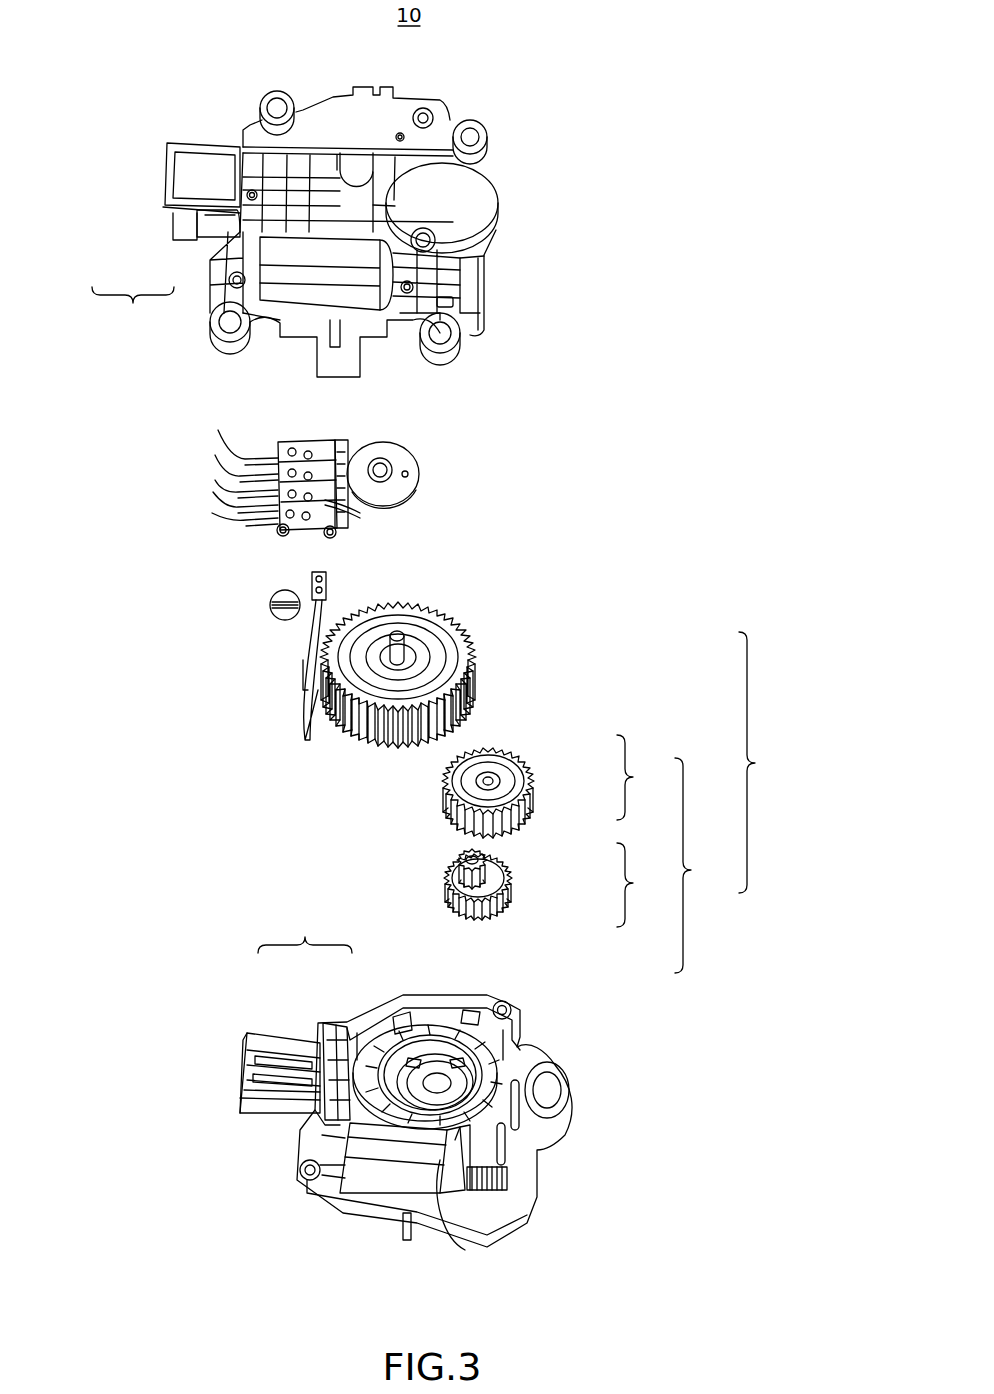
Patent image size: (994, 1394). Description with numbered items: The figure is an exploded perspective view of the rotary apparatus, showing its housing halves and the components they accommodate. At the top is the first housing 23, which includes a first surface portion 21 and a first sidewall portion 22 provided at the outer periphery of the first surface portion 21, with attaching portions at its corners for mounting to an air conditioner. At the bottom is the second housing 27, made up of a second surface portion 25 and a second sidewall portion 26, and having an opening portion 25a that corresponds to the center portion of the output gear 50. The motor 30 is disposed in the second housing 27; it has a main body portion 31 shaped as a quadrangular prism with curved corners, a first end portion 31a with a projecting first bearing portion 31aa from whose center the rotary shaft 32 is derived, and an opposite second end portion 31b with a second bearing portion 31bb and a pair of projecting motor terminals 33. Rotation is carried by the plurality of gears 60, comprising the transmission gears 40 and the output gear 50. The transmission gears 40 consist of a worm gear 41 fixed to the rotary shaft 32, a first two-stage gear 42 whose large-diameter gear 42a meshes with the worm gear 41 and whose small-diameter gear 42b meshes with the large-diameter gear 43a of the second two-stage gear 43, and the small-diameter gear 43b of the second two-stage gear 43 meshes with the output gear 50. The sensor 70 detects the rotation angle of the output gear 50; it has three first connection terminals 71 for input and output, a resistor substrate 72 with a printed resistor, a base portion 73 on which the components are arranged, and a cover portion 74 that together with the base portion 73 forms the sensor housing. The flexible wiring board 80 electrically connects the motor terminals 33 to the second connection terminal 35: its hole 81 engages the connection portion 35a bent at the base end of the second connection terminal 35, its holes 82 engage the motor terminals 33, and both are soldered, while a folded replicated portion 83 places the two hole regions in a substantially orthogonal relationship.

The first surface portion 21 is at (186, 178).
The first sidewall portion 22 is at (212, 222).
The first housing 23 is at (133, 310).
The second surface portion 25 is at (337, 1025).
The opening portion 25a is at (430, 1060).
The second sidewall portion 26 is at (268, 1033).
The second housing 27 is at (296, 1015).
The motor 30 is at (358, 1200).
The main body portion 31 is at (393, 1177).
The first end portion 31a is at (452, 1140).
The first bearing portion 31aa is at (443, 1177).
The second end portion 31b is at (330, 1128).
The second bearing portion 31bb is at (327, 1182).
The rotary shaft 32 is at (470, 1200).
The motor terminal 33 is at (327, 1140).
The second connection terminal 35 is at (218, 500).
The connection portion 35a is at (340, 505).
The transmission gear 40 is at (586, 854).
The worm gear 41 is at (527, 1113).
The first two-stage gear 42 is at (557, 885).
The gear having a large diameter 42a is at (510, 897).
The gear having a small diameter 42b is at (500, 865).
The second two-stage gear 43 is at (556, 786).
The gear having a large diameter 43a is at (528, 762).
The gear having a small diameter 43b is at (515, 830).
The output gear 50 is at (477, 677).
The plurality of gears 60 is at (556, 787).
The sensor 70 is at (338, 460).
The first connection terminals 71 is at (238, 463).
The resistor substrate 72 is at (344, 440).
The base portion 73 is at (297, 442).
The cover portion 74 is at (388, 450).
The flexible wiring board 80 is at (323, 656).
The hole 81 is at (328, 580).
The holes 82 is at (313, 707).
The replicated portion 83 is at (258, 606).